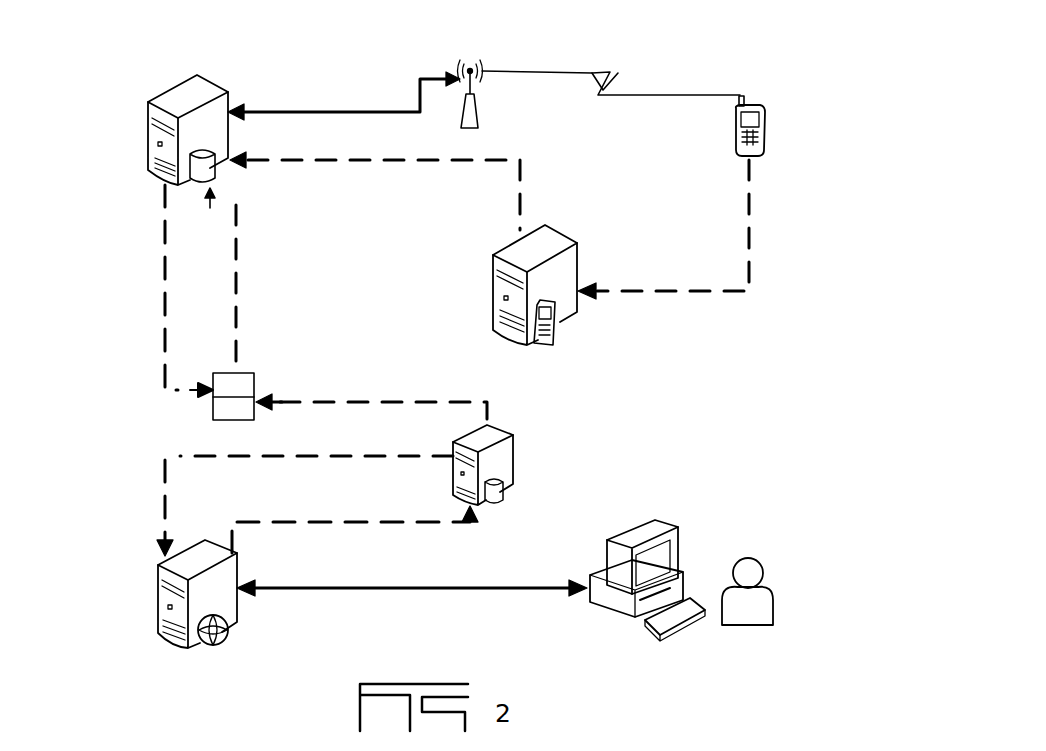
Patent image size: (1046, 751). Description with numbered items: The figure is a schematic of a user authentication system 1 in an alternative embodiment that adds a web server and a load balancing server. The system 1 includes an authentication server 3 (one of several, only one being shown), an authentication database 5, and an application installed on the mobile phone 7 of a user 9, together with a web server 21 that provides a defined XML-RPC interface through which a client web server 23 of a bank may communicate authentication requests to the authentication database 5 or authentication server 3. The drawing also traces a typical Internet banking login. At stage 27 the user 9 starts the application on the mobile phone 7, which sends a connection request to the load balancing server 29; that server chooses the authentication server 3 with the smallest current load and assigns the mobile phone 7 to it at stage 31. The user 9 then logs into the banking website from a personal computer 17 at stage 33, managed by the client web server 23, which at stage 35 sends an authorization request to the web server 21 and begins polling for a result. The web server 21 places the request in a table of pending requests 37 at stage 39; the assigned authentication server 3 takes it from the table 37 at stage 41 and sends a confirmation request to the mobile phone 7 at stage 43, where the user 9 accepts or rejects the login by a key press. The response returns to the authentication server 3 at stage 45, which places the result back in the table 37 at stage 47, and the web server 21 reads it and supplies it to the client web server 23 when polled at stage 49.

The user authentication system 1 is at (118, 58).
The authentication server 3 is at (148, 134).
The authentication database 5 is at (215, 176).
The mobile phone 7 is at (766, 118).
The user 9 is at (757, 560).
The personal computer 17 is at (648, 522).
The web server 21 is at (513, 440).
The client web server 23 is at (158, 583).
The stage of initiating the authentication application 27 is at (752, 237).
The load balancing server 29 is at (560, 230).
The stage of assigning the mobile phone to an authentication server 31 is at (402, 163).
The stage of logging into the Internet banking website 33 is at (430, 590).
The stage of sending an authorization request 35 is at (343, 525).
The table of pending requests 37 is at (255, 376).
The stage of placing the request in the table 39 is at (382, 403).
The stage of taking the request from the table 41 is at (238, 290).
The stage of sending a confirmation request 43 is at (588, 72).
The stage of communicating the user's response 45 is at (328, 110).
The stage of placing the authentication result in the table 47 is at (165, 262).
The stage of supplying the authentication result 49 is at (165, 478).